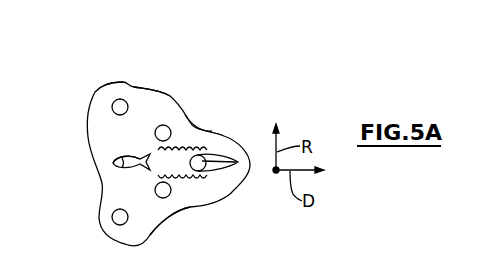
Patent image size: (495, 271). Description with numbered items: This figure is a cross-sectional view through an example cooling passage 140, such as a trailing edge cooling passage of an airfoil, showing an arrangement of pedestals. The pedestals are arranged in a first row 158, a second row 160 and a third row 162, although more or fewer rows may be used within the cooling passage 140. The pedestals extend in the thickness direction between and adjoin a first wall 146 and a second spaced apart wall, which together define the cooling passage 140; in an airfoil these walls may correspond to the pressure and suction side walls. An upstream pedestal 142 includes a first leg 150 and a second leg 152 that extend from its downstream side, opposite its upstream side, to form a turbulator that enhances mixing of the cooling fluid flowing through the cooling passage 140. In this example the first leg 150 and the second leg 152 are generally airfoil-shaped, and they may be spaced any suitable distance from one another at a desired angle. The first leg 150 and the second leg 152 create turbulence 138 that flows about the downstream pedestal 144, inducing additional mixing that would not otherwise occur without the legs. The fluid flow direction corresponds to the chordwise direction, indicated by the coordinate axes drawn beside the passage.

The turbulence 138 is at (207, 146).
The cooling passage 140 is at (173, 101).
The upstream pedestal 142 is at (112, 164).
The downstream pedestal 144 is at (225, 184).
The first wall 146 is at (158, 212).
The first leg 150 is at (132, 172).
The second leg 152 is at (132, 155).
The first row 158 is at (125, 79).
The second row 160 is at (166, 89).
The third row 162 is at (207, 122).